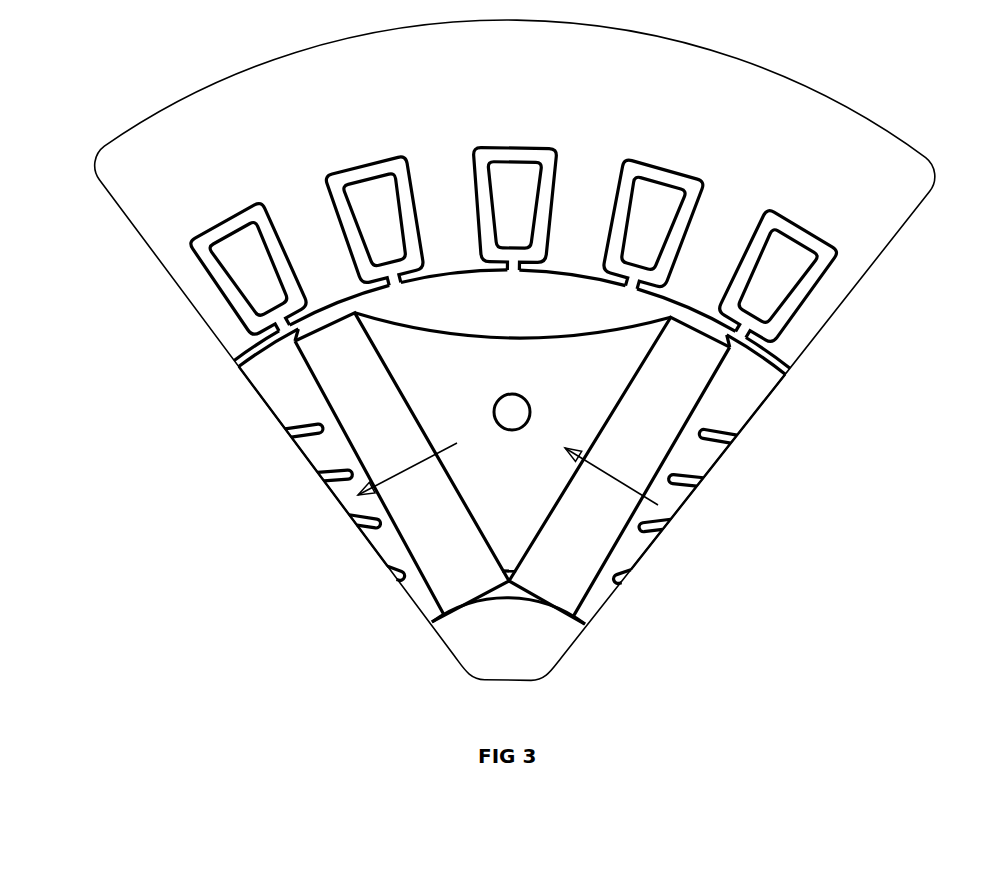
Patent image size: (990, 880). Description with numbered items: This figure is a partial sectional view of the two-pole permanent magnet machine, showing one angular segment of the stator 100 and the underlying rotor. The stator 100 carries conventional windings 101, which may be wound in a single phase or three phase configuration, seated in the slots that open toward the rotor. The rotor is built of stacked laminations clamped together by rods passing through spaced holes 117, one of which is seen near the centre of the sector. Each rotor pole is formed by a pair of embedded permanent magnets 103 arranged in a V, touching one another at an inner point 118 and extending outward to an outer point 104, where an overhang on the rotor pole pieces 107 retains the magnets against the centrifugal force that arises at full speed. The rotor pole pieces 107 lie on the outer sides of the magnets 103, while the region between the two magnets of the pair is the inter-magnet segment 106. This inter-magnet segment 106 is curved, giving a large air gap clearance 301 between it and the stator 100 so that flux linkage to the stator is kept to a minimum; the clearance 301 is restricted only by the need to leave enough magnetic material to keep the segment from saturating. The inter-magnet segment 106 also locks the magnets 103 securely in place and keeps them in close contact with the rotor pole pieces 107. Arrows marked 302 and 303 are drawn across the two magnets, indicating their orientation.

The stator 100 is at (450, 258).
The windings 101 is at (522, 187).
The permanent magnets 103 is at (355, 385).
The outer point 104 is at (730, 354).
The inter-magnet segment 106 is at (570, 380).
The rotor pole pieces 107 is at (728, 408).
The spaced holes 117 is at (512, 412).
The inner point 118 is at (537, 600).
The air gap clearance 301 is at (515, 272).
The magnetization direction 302 is at (612, 478).
The magnetization direction 303 is at (410, 470).